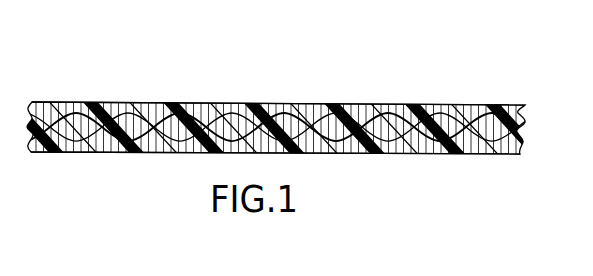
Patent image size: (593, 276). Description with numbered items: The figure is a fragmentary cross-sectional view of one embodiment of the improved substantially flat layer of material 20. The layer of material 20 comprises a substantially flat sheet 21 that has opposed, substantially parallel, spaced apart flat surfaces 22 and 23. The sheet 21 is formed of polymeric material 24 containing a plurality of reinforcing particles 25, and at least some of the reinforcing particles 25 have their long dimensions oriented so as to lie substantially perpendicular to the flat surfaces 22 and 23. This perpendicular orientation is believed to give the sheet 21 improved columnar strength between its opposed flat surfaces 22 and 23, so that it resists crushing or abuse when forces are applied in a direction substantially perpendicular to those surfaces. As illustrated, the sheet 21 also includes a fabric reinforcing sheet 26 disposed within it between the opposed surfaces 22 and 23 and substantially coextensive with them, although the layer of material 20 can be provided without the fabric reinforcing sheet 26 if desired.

The layer of material 20 is at (285, 105).
The sheet 21 is at (500, 106).
The flat surface 22 is at (362, 105).
The flat surface 23 is at (359, 152).
The polymeric material 24 is at (198, 112).
The reinforcing particles 25 is at (293, 115).
The fabric reinforcing sheet 26 is at (167, 150).